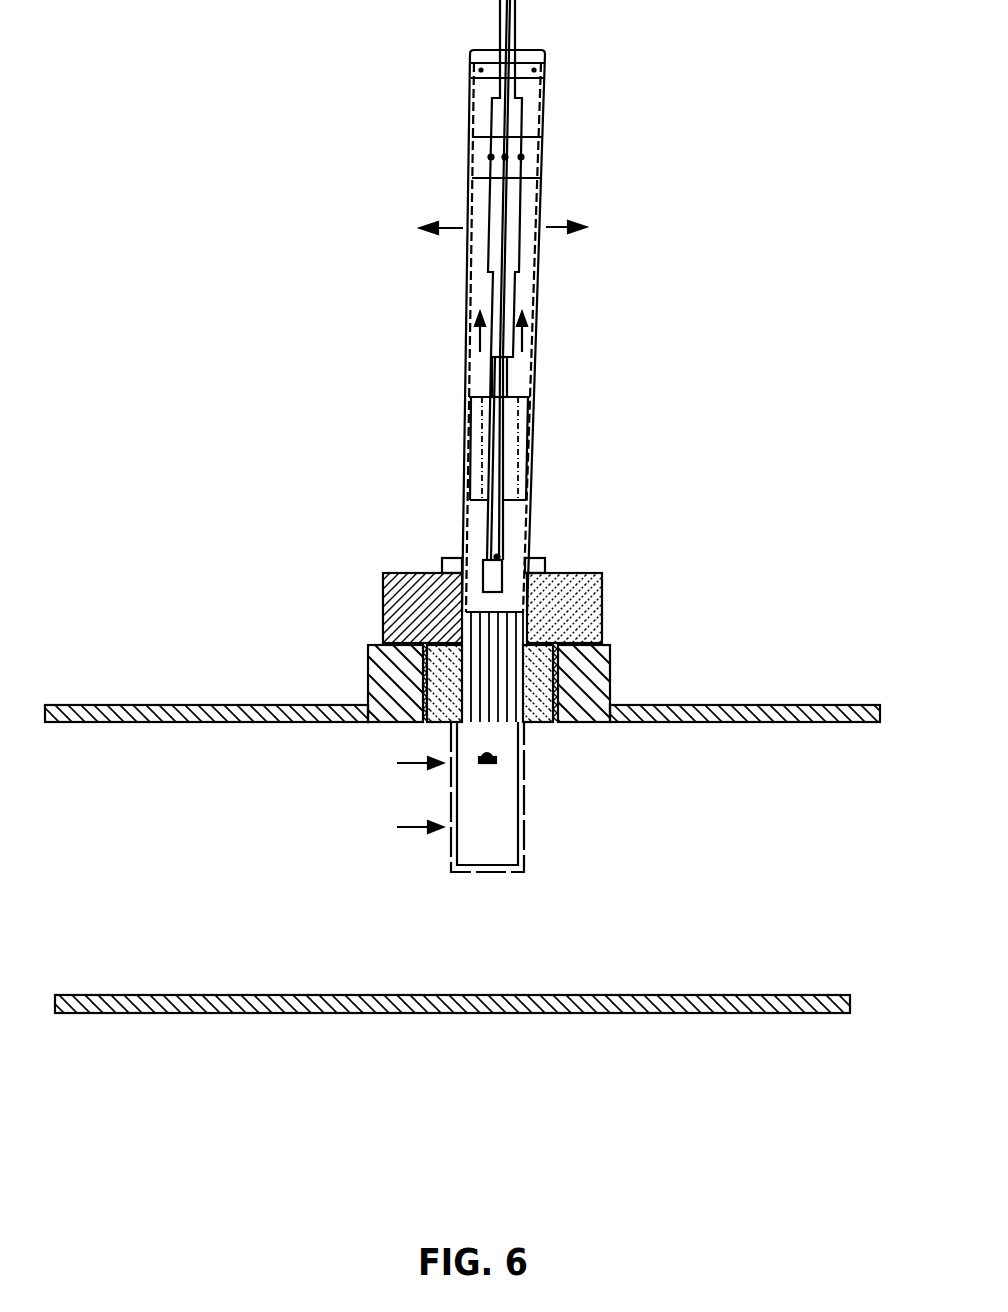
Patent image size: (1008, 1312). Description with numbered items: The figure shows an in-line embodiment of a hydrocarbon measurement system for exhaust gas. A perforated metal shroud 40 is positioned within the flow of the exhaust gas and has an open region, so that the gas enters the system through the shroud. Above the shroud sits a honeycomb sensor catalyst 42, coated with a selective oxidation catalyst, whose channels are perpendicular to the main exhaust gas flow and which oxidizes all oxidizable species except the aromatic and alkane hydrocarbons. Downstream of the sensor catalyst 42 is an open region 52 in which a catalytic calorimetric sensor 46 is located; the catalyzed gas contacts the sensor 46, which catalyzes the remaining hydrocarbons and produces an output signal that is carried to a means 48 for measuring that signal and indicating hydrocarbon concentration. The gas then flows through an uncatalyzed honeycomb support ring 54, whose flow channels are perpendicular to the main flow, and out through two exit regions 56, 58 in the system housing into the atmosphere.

The perforated metal shroud 40 is at (462, 867).
The honeycomb sensor catalyst 42 is at (487, 667).
The catalytic calorimetric sensor 46 is at (498, 557).
The means for measuring the output signal of the sensor 48 is at (520, 204).
The open region 52 is at (477, 557).
The uncatalyzed honeycomb support ring 54 is at (520, 437).
The exit region 56 is at (466, 235).
The exit region 58 is at (541, 243).